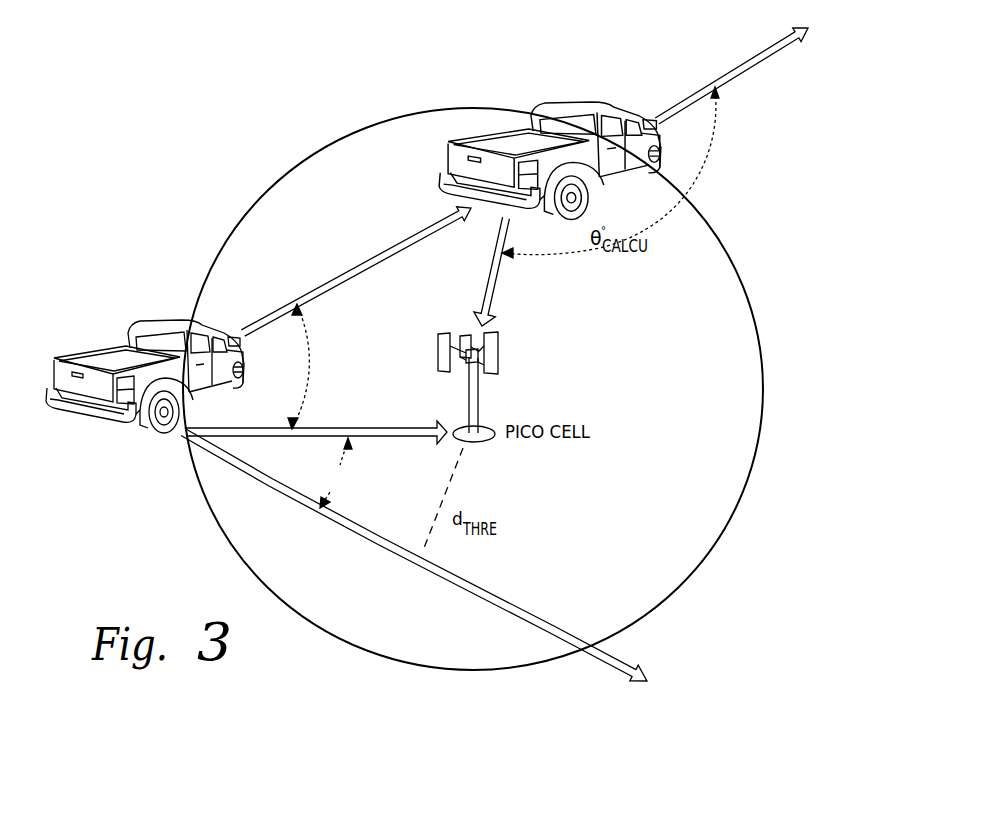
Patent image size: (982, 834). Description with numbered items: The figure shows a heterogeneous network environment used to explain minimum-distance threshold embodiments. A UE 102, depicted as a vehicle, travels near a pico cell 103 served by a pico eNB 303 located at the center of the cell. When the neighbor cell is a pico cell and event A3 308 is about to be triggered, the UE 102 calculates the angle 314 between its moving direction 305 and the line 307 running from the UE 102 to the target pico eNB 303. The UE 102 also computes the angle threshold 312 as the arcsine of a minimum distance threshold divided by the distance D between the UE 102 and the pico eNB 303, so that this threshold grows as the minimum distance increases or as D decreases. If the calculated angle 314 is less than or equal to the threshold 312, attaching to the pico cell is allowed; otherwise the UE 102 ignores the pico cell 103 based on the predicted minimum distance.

The UE 102 is at (142, 338).
The pico cell 103 is at (725, 250).
The pico eNB 303 is at (442, 352).
The moving direction 305 is at (609, 673).
The line from the UE to target pico eNB 307 is at (351, 428).
The event A3 308 is at (112, 490).
The angle threshold 312 is at (355, 467).
The calculated angle 314 is at (331, 351).